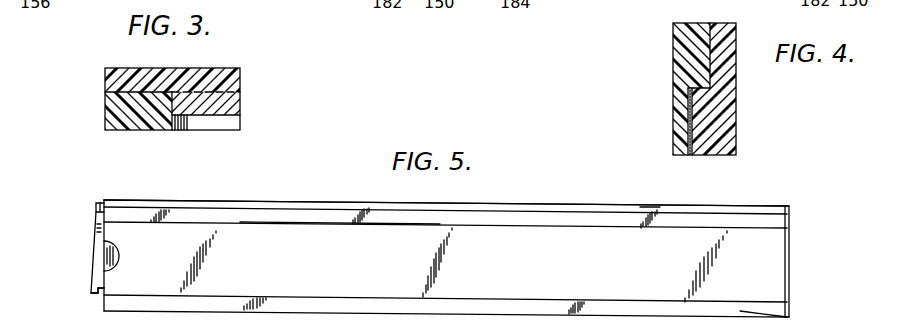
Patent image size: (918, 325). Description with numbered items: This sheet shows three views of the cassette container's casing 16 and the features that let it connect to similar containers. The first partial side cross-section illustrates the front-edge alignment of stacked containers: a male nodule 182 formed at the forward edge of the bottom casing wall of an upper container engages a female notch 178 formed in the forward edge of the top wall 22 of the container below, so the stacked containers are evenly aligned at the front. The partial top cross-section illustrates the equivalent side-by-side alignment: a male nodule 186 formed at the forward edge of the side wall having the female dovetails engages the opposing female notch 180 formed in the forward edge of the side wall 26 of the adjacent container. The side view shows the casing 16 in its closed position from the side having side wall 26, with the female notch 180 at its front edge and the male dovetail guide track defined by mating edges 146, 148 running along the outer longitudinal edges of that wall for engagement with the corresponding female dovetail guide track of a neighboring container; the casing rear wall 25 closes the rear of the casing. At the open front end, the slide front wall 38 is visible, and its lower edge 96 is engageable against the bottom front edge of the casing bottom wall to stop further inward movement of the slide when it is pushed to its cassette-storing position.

In FIG. 3, the male nodule 182 is at (218, 108).
In FIG. 3, the female notch 178 is at (194, 119).
In FIG. 4, the female notch 180 is at (680, 143).
In FIG. 5, the female notch 180 is at (109, 250).
In FIG. 4, the male nodule 186 is at (703, 122).
In FIG. 5, the casing 16 is at (569, 192).
In FIG. 5, the top wall 22 is at (295, 200).
In FIG. 5, the side wall 26 is at (247, 243).
In FIG. 5, the male dovetail mating edge 146 is at (660, 221).
In FIG. 5, the casing rear wall 25 is at (790, 265).
In FIG. 5, the male dovetail mating edge 148 is at (752, 311).
In FIG. 5, the slide front wall 38 is at (96, 247).
In FIG. 5, the lower edge 96 is at (93, 297).